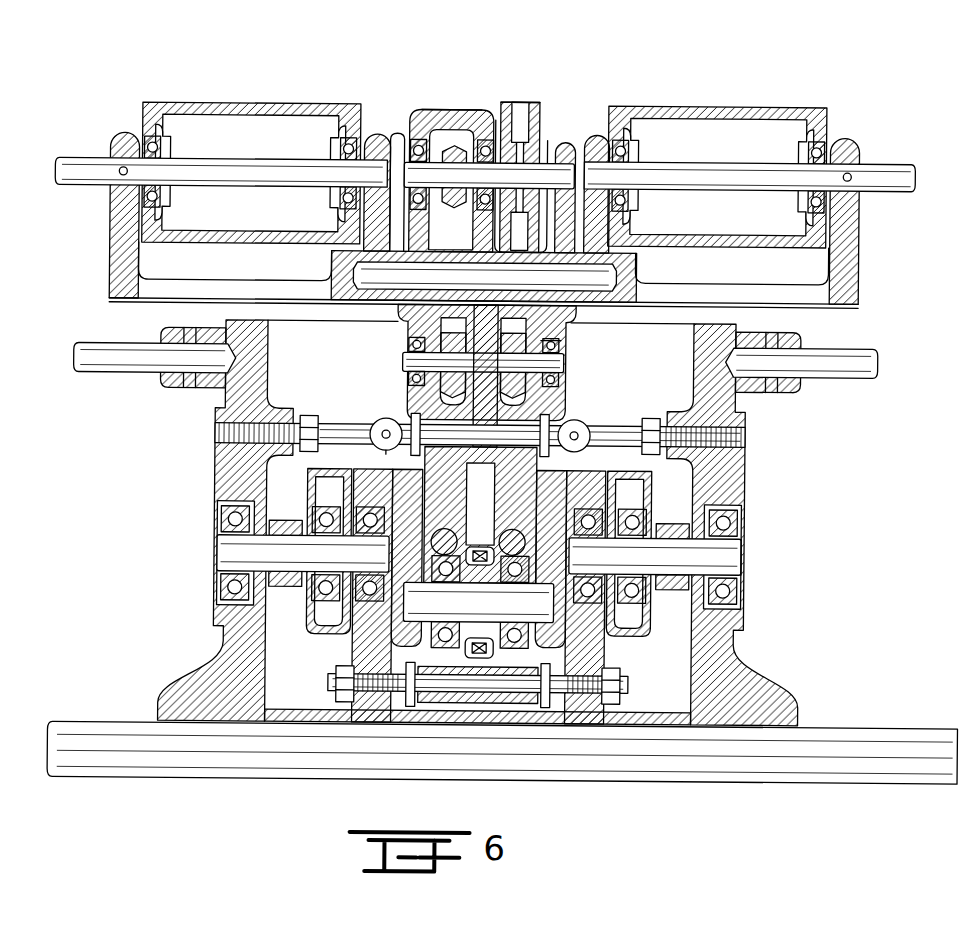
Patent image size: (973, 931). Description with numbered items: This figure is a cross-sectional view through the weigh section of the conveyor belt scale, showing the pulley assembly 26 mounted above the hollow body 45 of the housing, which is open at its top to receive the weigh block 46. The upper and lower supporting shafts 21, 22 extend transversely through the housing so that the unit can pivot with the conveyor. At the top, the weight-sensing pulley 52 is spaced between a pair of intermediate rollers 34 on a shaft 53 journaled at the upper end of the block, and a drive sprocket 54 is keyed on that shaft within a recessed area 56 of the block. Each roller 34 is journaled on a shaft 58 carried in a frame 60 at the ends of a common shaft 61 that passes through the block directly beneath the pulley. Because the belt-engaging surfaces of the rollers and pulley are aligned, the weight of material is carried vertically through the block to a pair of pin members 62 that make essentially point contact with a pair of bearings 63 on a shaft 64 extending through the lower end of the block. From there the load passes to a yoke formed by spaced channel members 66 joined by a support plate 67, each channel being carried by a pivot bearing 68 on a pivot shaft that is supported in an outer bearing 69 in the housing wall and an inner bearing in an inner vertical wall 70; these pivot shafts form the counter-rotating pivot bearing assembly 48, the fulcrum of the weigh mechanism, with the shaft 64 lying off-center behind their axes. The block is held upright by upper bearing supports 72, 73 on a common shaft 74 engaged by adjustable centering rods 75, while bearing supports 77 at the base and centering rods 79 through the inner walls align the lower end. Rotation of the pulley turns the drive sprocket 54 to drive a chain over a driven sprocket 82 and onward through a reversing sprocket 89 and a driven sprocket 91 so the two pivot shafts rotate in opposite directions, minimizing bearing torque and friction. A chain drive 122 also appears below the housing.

The upper supporting shaft 21 is at (90, 346).
The lower supporting shaft 22 is at (850, 725).
The pulley assembly 26 is at (538, 101).
The intermediate rollers 34 is at (243, 105).
The hollow body 45 is at (748, 410).
The weigh block 46 is at (430, 100).
The counter-rotating pivot bearing assembly 48 is at (770, 540).
The weight-sensing pulley 52 is at (503, 102).
The shaft 53 is at (398, 160).
The drive sprocket 54 is at (448, 152).
The recessed area 56 is at (418, 112).
The shaft 58 is at (68, 161).
The frame 60 is at (108, 255).
The common shaft 61 is at (590, 291).
The pin members 62 is at (508, 532).
The bearings 63 is at (440, 695).
The shaft 64 is at (506, 609).
The channel members 66 is at (312, 620).
The support plate 67 is at (610, 630).
The pivot bearing 68 is at (313, 600).
The bearing 69 is at (222, 516).
The inner vertical wall 70 is at (360, 640).
The upper bearing support 72 is at (413, 414).
The upper bearing support 73 is at (378, 420).
The common shaft 74 is at (392, 454).
The adjustable centering rod 75 is at (338, 425).
The bearing supports 77 is at (412, 708).
The centering rods 79 is at (330, 684).
The driven sprocket 82 is at (410, 338).
The reversing sprocket 89 is at (662, 522).
The driven sprocket 91 is at (300, 522).
The chain drive 122 is at (481, 660).